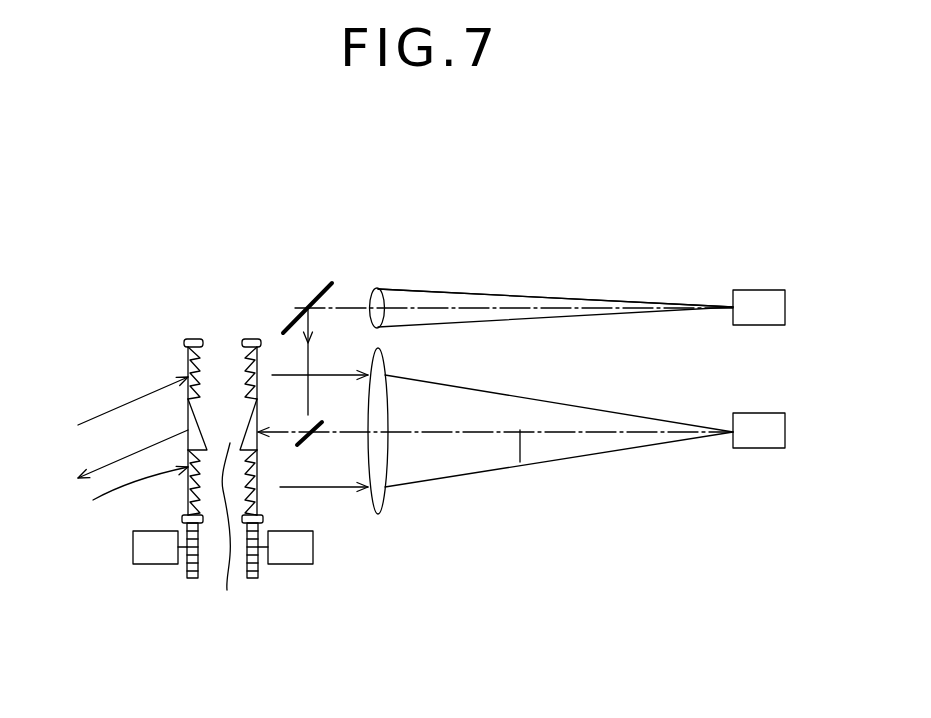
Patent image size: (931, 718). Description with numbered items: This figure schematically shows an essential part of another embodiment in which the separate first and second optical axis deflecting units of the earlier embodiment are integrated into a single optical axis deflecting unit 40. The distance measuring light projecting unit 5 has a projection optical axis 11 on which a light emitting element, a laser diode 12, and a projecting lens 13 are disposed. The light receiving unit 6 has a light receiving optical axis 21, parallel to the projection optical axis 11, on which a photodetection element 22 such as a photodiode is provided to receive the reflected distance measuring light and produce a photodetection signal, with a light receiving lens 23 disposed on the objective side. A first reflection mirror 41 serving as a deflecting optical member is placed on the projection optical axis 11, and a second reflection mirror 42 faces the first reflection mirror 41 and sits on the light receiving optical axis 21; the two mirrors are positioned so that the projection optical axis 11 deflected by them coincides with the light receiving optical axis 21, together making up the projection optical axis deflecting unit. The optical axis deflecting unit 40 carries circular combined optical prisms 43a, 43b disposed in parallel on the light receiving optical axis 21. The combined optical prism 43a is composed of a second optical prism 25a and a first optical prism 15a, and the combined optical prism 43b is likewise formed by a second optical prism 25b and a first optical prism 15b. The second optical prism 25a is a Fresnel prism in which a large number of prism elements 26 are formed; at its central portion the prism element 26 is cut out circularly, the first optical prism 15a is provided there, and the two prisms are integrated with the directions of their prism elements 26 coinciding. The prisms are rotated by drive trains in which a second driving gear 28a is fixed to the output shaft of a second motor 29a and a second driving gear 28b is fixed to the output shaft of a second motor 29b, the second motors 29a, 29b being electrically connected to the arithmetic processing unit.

The optical axis deflecting unit 40 is at (220, 325).
The second optical prism 25a is at (184, 356).
The second optical prism 25b is at (263, 360).
The prism elements 26 is at (197, 373).
The first optical prism 15a is at (188, 412).
The first optical prism 15b is at (233, 539).
The combined optical prism 43a is at (188, 485).
The combined optical prism 43b is at (258, 497).
The second driving gear 28a is at (190, 580).
The second driving gear 28b is at (253, 580).
The second motor 29a is at (150, 565).
The second motor 29b is at (295, 565).
The first reflection mirror 41 is at (330, 285).
The second reflection mirror 42 is at (298, 446).
The projecting lens 13 is at (380, 290).
The distance measuring light projecting unit 5 is at (597, 300).
The projection optical axis 11 is at (480, 292).
The laser diode 12 is at (750, 290).
The light receiving lens 23 is at (386, 500).
The light receiving unit 6 is at (577, 405).
The photodetection element 22 is at (750, 413).
The light receiving optical axis 21 is at (520, 462).